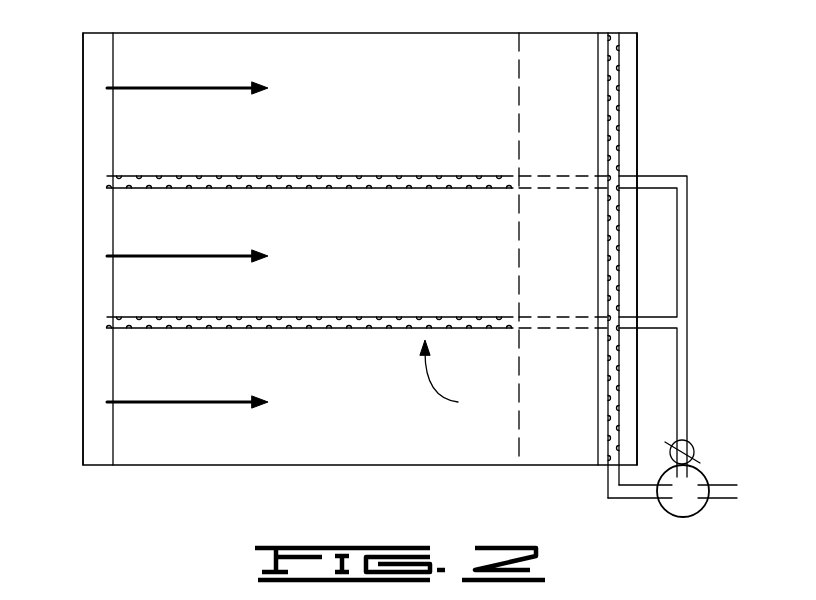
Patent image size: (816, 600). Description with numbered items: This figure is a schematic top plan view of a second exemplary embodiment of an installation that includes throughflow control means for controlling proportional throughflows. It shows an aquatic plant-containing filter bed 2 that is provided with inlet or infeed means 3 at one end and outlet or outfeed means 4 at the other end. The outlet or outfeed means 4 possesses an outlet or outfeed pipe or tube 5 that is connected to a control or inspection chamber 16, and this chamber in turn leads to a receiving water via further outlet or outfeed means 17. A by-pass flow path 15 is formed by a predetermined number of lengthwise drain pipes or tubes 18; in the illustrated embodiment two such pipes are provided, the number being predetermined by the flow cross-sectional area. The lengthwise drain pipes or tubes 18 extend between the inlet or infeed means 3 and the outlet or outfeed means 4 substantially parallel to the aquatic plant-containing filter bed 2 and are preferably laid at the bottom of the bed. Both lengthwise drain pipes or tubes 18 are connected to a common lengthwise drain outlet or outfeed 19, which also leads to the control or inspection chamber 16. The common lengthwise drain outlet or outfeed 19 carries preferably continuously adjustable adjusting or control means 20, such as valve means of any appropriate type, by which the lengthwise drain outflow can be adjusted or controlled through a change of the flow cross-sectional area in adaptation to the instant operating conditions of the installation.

The aquatic plant-containing filter bed 2 is at (360, 249).
The inlet or infeed means 3 is at (90, 224).
The outlet or outfeed means 4 is at (626, 100).
The outlet or outfeed pipe or tube 5 is at (620, 253).
The by-pass flow path 15 is at (450, 378).
The control or inspection chamber 16 is at (686, 507).
The further outlet or outfeed means 17 is at (721, 482).
The lengthwise drain pipes or tubes 18 is at (303, 177).
The common lengthwise drain outlet or outfeed 19 is at (682, 385).
The adjusting or control means 20 is at (688, 445).